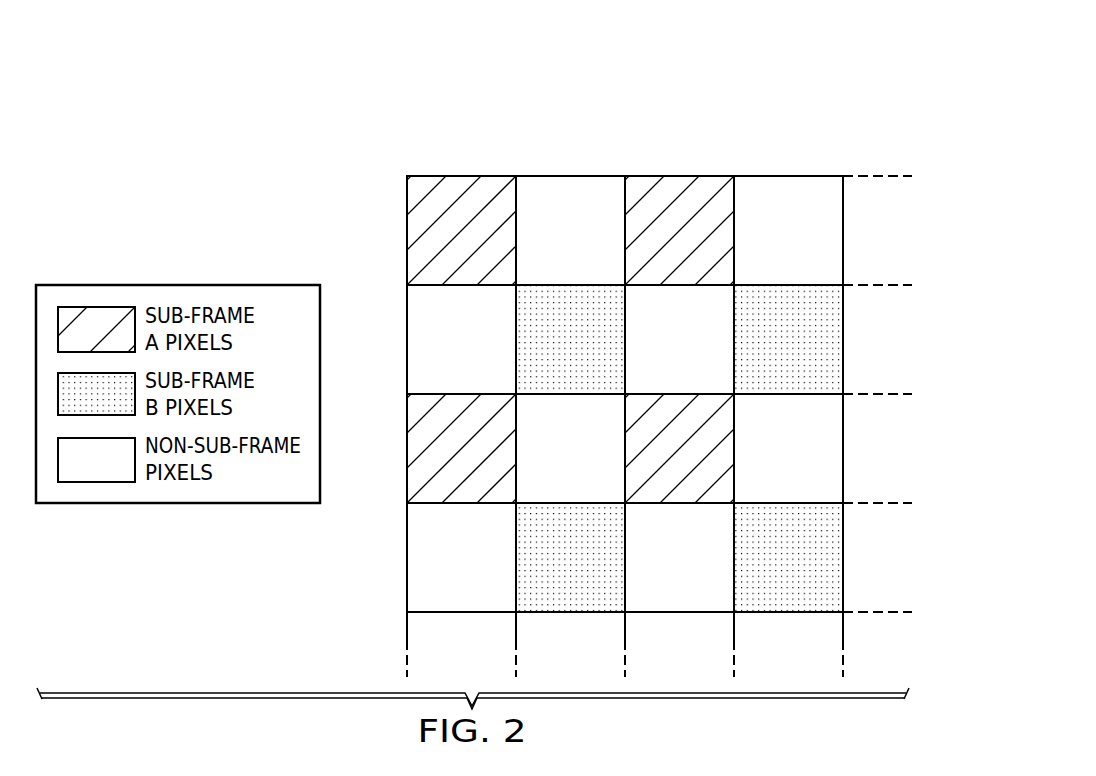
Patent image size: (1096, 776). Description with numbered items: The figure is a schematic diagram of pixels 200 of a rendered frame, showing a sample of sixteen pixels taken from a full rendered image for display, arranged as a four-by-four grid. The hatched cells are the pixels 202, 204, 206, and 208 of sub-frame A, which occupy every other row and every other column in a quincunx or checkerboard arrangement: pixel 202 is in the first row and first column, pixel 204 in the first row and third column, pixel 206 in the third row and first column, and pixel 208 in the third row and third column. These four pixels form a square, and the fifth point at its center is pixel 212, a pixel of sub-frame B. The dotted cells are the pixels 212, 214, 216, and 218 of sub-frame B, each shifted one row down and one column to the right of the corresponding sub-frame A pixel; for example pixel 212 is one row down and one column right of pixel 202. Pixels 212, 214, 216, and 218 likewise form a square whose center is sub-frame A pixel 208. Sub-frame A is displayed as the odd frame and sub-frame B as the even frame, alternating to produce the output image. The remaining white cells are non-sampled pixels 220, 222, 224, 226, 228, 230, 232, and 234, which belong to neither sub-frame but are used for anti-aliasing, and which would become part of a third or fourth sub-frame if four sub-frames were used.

The pixels 200 is at (625, 343).
The pixel of sub-frame A 202 is at (410, 231).
The pixel of sub-frame A 204 is at (680, 185).
The pixel of sub-frame A 206 is at (410, 448).
The pixel of sub-frame A 208 is at (658, 464).
The pixel of sub-frame B 212 is at (548, 355).
The pixel of sub-frame B 214 is at (836, 340).
The pixel of sub-frame B 216 is at (570, 605).
The pixel of sub-frame B 218 is at (836, 558).
The non-sampled pixel 220 is at (570, 185).
The non-sampled pixel 222 is at (836, 230).
The non-sampled pixel 224 is at (410, 340).
The non-sampled pixel 226 is at (658, 355).
The non-sampled pixel 228 is at (548, 464).
The non-sampled pixel 230 is at (836, 448).
The non-sampled pixel 232 is at (410, 558).
The non-sampled pixel 234 is at (680, 605).